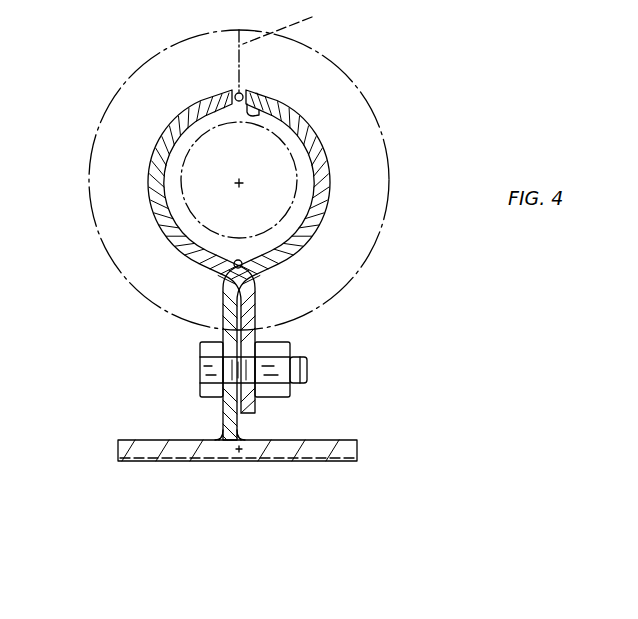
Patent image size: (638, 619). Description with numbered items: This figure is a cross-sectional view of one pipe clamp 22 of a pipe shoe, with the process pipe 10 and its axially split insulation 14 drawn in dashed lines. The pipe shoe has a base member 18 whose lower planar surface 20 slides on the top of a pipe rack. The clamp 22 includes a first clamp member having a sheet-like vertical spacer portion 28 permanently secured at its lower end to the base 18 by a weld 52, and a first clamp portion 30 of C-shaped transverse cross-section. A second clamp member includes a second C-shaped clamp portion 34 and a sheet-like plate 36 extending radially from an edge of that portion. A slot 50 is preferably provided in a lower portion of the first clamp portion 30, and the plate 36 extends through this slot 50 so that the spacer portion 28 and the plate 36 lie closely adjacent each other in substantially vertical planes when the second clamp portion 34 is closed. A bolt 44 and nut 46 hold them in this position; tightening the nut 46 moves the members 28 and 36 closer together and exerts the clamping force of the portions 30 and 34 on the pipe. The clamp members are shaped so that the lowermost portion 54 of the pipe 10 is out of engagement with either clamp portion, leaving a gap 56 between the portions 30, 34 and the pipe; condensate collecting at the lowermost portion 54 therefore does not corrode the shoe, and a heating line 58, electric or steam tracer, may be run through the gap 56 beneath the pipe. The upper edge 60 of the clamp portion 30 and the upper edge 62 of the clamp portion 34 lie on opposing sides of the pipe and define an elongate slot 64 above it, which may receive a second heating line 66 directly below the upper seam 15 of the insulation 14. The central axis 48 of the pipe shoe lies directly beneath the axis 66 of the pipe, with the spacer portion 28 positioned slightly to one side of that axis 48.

The process pipe 10 is at (303, 192).
The insulation 14 is at (372, 138).
The upper seam 15 is at (289, 48).
The base member 18 is at (345, 442).
The lower planar surface 20 is at (152, 462).
The pipe clamp 22 is at (110, 364).
The vertical spacer portion 28 is at (225, 333).
The first clamp portion 30 is at (305, 238).
The second clamp portion 34 is at (150, 183).
The plate 36 is at (255, 333).
The bolt 44 is at (210, 377).
The nut 46 is at (275, 396).
The central axis 48 is at (240, 452).
The slot 50 is at (259, 287).
The weld 52 is at (217, 435).
The lowermost portion 54 is at (238, 259).
The gap 56 is at (203, 266).
The heating line 58 is at (268, 262).
The upper edge 60 is at (247, 112).
The upper edge 62 is at (236, 92).
The elongate slot 64 is at (243, 92).
The second heating line 66 is at (232, 101).